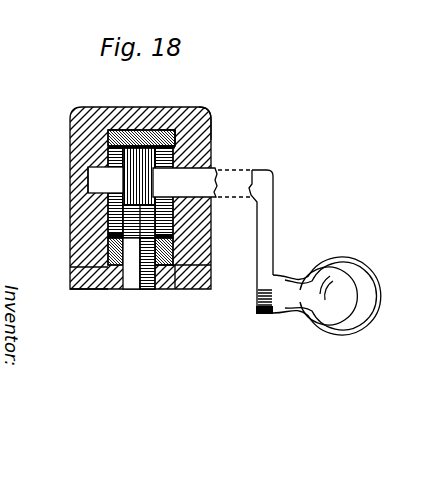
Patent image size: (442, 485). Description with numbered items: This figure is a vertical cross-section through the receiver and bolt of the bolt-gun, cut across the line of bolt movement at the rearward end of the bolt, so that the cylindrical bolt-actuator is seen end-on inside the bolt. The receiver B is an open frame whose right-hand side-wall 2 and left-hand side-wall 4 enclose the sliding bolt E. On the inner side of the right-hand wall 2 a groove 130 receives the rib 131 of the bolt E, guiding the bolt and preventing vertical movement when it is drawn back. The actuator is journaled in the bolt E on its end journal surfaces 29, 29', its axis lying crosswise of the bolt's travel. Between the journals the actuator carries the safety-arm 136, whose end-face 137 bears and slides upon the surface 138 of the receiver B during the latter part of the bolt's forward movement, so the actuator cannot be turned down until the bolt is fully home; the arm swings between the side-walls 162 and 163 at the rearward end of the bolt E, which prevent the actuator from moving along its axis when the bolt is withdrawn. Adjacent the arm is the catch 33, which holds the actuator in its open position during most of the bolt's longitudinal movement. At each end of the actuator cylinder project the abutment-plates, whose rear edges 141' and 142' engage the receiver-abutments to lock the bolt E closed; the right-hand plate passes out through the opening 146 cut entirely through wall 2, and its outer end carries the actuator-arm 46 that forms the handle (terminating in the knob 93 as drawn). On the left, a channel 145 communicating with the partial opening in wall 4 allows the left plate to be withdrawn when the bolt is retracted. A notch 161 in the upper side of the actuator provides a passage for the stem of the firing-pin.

The receiver B is at (83, 140).
The bolt E is at (147, 135).
The right-hand side-wall 2 is at (202, 232).
The left-hand side-wall 4 is at (80, 153).
The journal surface 29 is at (176, 117).
The journal surface 29' is at (73, 193).
The catch 33 is at (106, 240).
The actuator-arm 46 is at (263, 225).
The bulb 93 is at (355, 268).
The groove 130 is at (205, 210).
The rib 131 is at (182, 230).
The safety-arm 136 is at (145, 262).
The end-face 137 is at (140, 262).
The receiver surface 138 is at (140, 257).
The rear edge of abutment-plate 141' is at (203, 172).
The rear edge of abutment-plate 142' is at (57, 188).
The channel 145 is at (88, 177).
The opening 146 is at (213, 135).
The notch 161 is at (130, 135).
The side-wall of bolt 162 is at (202, 277).
The side-wall of bolt 163 is at (97, 287).